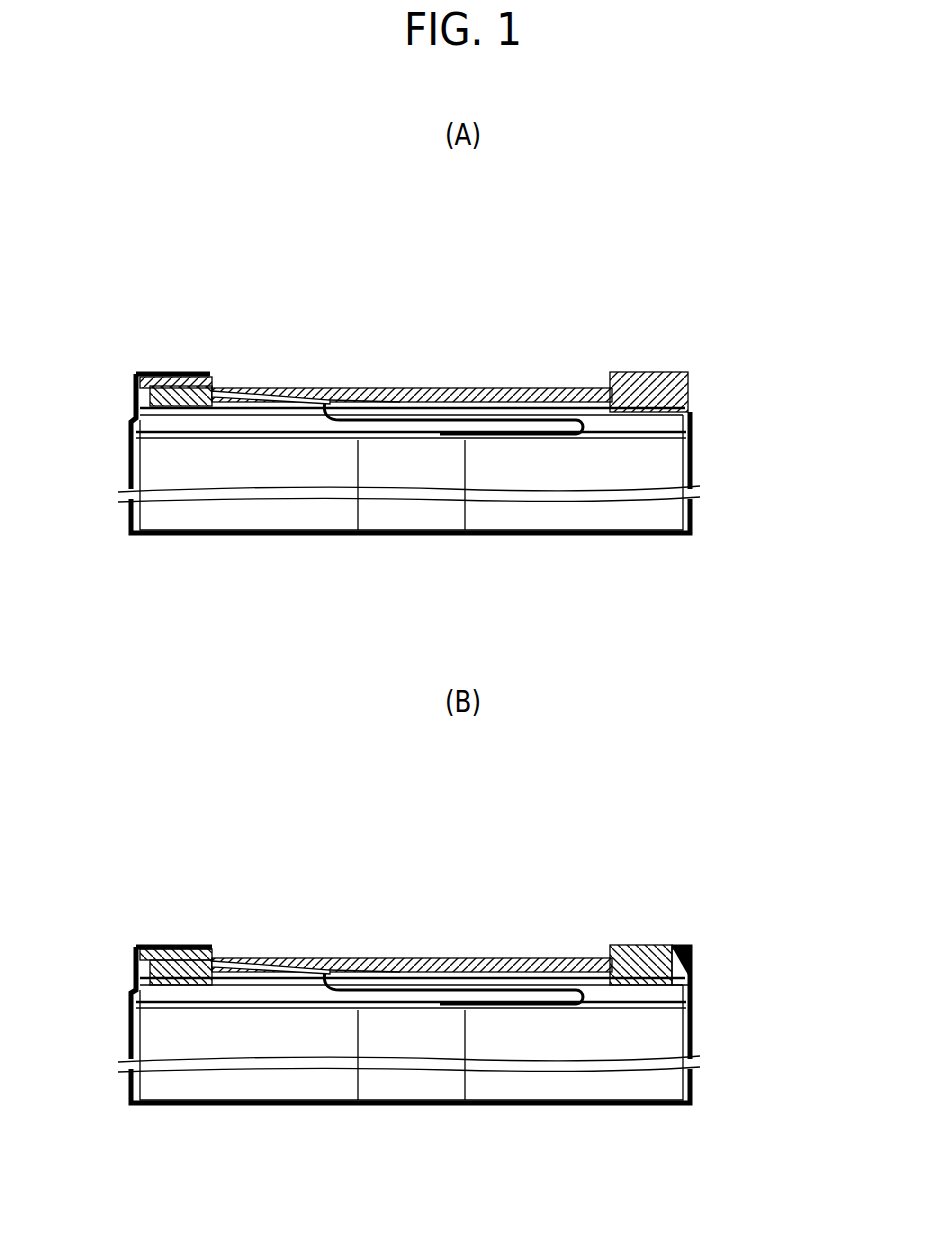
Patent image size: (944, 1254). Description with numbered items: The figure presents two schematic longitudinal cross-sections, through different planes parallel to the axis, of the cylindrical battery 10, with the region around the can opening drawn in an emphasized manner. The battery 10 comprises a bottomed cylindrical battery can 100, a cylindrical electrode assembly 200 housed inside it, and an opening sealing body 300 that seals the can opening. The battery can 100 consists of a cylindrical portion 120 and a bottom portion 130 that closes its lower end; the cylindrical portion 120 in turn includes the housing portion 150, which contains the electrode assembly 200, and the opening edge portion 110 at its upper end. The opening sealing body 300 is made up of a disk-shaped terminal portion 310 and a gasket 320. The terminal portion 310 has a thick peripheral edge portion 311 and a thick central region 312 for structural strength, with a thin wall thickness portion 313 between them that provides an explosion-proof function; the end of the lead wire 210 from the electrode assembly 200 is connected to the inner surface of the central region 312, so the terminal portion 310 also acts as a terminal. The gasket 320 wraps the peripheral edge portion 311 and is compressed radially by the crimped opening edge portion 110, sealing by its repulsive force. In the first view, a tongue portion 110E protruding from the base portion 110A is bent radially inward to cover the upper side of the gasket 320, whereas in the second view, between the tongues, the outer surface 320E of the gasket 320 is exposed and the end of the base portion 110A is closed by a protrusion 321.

The battery 10 is at (560, 318).
The battery can 100 is at (462, 745).
The opening edge portion 110 is at (442, 661).
The base portion 110A is at (697, 397).
The tongue portion 110E is at (665, 382).
The cylindrical portion 120 is at (464, 745).
The bottom portion 130 is at (550, 538).
The housing portion 150 is at (550, 767).
The electrode assembly 200 is at (156, 476).
The lead wire 210 is at (457, 428).
The opening sealing body 300 is at (426, 621).
The terminal portion 310 is at (303, 634).
The peripheral edge portion 311 is at (222, 651).
The central region 312 is at (351, 652).
The thin wall thickness portion 313 is at (253, 386).
The gasket 320 is at (202, 370).
The outer surface of gasket 320E is at (641, 941).
The protrusion 321 is at (692, 941).